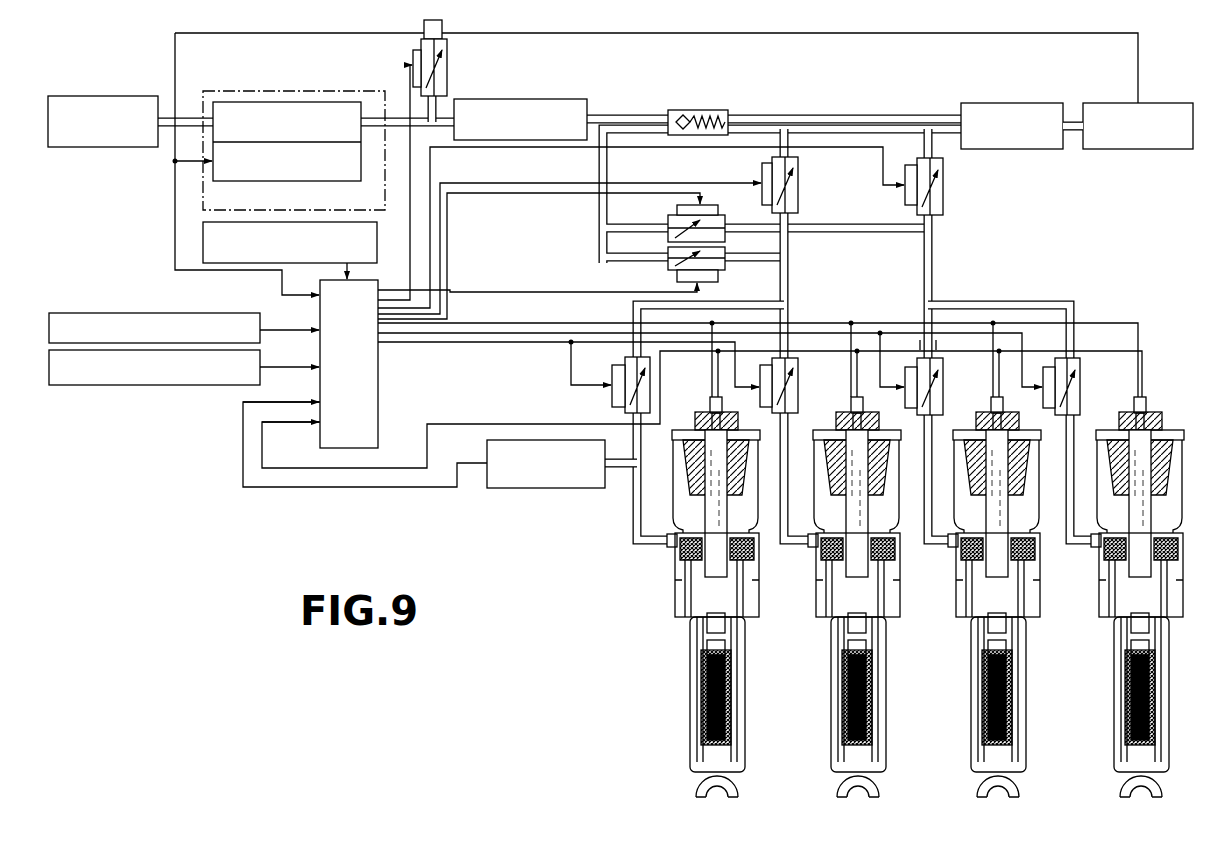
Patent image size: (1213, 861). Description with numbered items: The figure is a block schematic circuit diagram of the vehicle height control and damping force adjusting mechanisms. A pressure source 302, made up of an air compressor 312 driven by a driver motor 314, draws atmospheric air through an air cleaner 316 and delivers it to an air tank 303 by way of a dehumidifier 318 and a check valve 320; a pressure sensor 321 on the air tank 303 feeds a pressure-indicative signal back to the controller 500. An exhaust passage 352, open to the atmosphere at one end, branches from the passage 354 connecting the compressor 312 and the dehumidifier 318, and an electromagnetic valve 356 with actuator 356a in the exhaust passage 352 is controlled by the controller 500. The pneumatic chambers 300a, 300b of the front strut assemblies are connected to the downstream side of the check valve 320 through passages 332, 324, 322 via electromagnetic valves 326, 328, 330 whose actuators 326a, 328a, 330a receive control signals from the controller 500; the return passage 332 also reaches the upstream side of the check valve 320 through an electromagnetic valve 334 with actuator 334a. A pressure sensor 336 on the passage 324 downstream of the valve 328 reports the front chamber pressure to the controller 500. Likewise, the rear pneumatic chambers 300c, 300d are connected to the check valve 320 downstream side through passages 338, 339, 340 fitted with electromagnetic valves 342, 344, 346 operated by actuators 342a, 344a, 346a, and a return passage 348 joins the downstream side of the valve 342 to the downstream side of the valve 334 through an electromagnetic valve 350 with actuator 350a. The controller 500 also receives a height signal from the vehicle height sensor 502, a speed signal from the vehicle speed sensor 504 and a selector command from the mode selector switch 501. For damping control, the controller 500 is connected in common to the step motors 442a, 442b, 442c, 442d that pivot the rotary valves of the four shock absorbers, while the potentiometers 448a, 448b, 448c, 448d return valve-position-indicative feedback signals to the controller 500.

The pneumatic chamber 300a is at (690, 510).
The pneumatic chamber 300b is at (830, 525).
The pneumatic chamber 300c is at (970, 525).
The pneumatic chamber 300d is at (1112, 522).
The pressure source 302 is at (236, 91).
The air tank 303 is at (1015, 103).
The air compressor 312 is at (298, 102).
The driver motor 314 is at (213, 172).
The air cleaner 316 is at (97, 96).
The dehumidifier 318 is at (545, 99).
The check valve 320 is at (704, 110).
The pressure sensor 321 is at (1165, 103).
The passage 322 is at (786, 335).
The passage 324 is at (633, 319).
The electromagnetic valve 326 is at (798, 172).
The actuator 326a is at (766, 163).
The electromagnetic valve 328 is at (625, 362).
The actuator 328a is at (612, 396).
The electromagnetic valve 330 is at (798, 388).
The actuator 330a is at (766, 365).
The return passage 332 is at (788, 275).
The electromagnetic valve 334 is at (725, 270).
The actuator 334a is at (677, 277).
The pressure sensor 336 is at (530, 488).
The passage 338 is at (934, 232).
The passage 339 is at (936, 330).
The passage 340 is at (1075, 303).
The electromagnetic valve 342 is at (943, 185).
The actuator 342a is at (905, 200).
The electromagnetic valve 344 is at (943, 388).
The actuator 344a is at (908, 367).
The electromagnetic valve 346 is at (1080, 388).
The actuator 346a is at (1048, 367).
The return passage 348 is at (866, 233).
The electromagnetic valve 350 is at (668, 218).
The actuator 350a is at (710, 205).
The exhaust passage 352 is at (442, 30).
The passage 354 is at (415, 128).
The electromagnetic valve 356 is at (447, 65).
The actuator 356a is at (413, 63).
The step motor 442a is at (707, 623).
The step motor 442b is at (848, 623).
The step motor 442c is at (988, 623).
The step motor 442d is at (1131, 623).
The potentiometer 448a is at (707, 647).
The potentiometer 448b is at (848, 648).
The potentiometer 448c is at (988, 648).
The potentiometer 448d is at (1131, 648).
The controller 500 is at (378, 372).
The mode selector switch 501 is at (203, 240).
The vehicle height sensor 502 is at (125, 313).
The vehicle speed sensor 504 is at (127, 385).